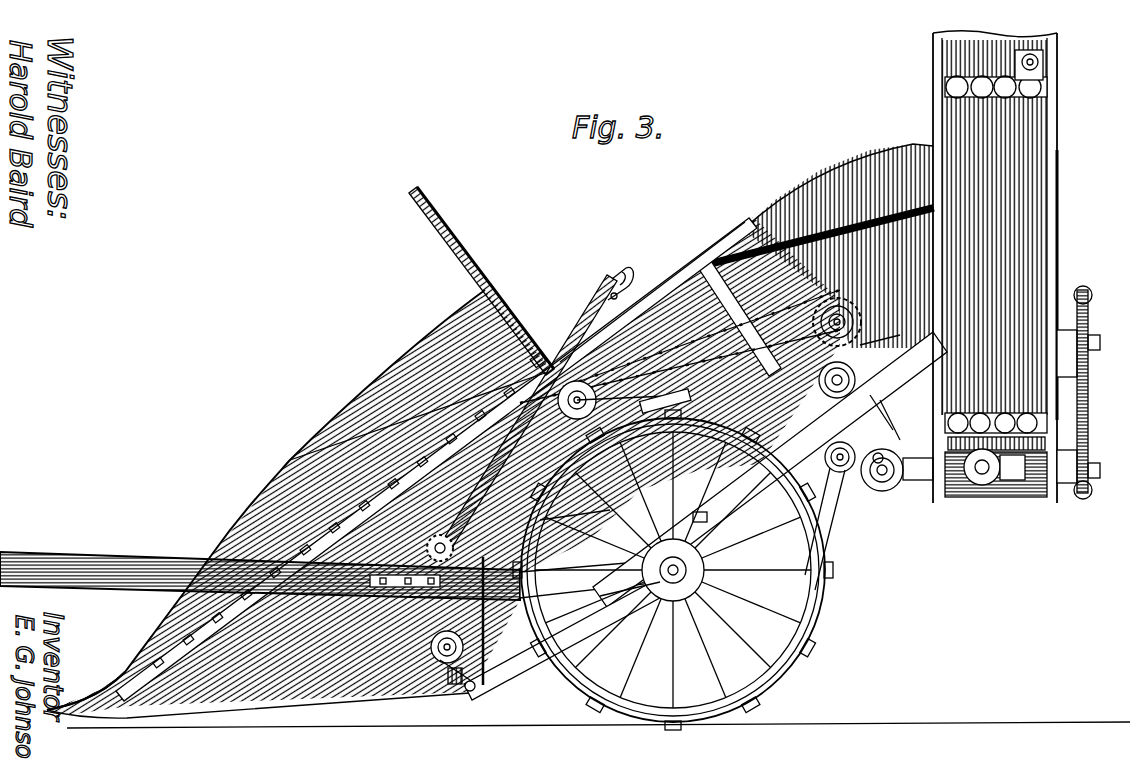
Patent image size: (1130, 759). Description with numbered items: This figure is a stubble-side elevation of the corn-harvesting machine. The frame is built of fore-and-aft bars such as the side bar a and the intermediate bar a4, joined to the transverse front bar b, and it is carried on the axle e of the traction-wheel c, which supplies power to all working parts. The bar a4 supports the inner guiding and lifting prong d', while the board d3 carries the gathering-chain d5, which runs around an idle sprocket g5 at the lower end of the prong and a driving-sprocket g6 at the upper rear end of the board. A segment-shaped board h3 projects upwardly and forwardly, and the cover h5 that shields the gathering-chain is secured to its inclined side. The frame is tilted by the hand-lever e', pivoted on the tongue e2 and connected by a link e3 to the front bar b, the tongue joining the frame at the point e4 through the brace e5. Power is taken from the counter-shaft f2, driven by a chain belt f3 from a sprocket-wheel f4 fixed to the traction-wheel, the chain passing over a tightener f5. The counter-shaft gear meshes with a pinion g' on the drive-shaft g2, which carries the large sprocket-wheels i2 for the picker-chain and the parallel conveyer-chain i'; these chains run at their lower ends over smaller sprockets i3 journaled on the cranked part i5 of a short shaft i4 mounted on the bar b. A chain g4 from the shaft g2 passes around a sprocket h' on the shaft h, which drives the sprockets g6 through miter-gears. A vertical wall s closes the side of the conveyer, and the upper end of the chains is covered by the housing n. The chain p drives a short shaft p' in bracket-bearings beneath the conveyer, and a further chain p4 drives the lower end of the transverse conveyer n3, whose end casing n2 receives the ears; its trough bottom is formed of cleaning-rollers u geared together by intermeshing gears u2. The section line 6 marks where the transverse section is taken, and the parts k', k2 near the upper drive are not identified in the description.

The cover or shield h5 is at (327, 420).
The housing n is at (873, 173).
The pinion g' is at (823, 275).
The hatched section k2 is at (727, 318).
The bar k' is at (770, 317).
The drive-shaft g2 is at (862, 312).
The large sprocket-wheels i2 is at (893, 330).
The board d3 is at (742, 232).
The idle sprockets g5 is at (147, 660).
The vertical wall s is at (647, 330).
The chain g4 is at (680, 346).
The front transverse bar b is at (526, 417).
The segment-shaped board h3 is at (463, 256).
The section line 6 is at (412, 185).
The hand-lever e' is at (591, 301).
The driving-sprockets g6 is at (530, 364).
The gathering-chain d5 is at (530, 378).
The shaft h is at (624, 398).
The sprocket h' is at (665, 398).
The tongue e2 is at (162, 565).
The link e3 is at (420, 541).
The fore-and-aft bar a is at (892, 390).
The chain p is at (892, 418).
The counter-shaft f2 is at (869, 444).
The tightener f5 is at (843, 472).
The short shaft p' is at (897, 493).
The axle e is at (693, 570).
The traction-wheel c is at (828, 586).
The chain belt f3 is at (820, 553).
The sprocket-wheel f4 is at (775, 633).
The conveyer-chain i' is at (717, 522).
The point of connection e4 is at (630, 600).
The brace e5 is at (439, 634).
The smaller sprockets i3 is at (440, 660).
The cranked part i5 is at (488, 687).
The intermediate fore-and-aft bar a4 is at (465, 692).
The short shaft i4 is at (440, 688).
The inner guiding and lifting prong d' is at (86, 683).
The cleaning-rollers u is at (1013, 146).
The transverse conveyer n3 is at (1052, 272).
The end casing n2 is at (990, 487).
The intermeshing gears u2 is at (1023, 455).
The chain p4 is at (1083, 422).